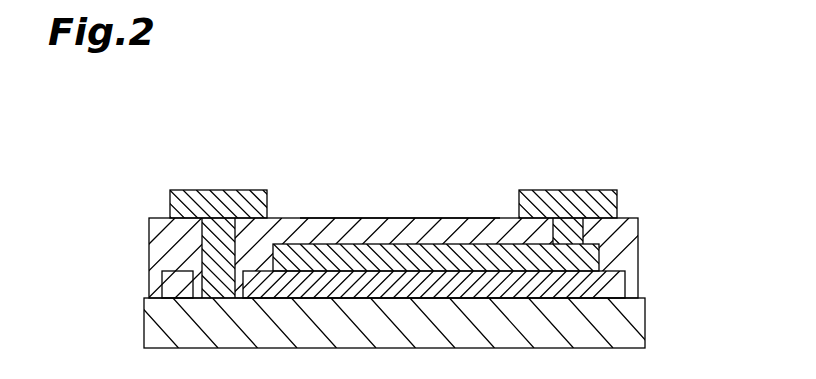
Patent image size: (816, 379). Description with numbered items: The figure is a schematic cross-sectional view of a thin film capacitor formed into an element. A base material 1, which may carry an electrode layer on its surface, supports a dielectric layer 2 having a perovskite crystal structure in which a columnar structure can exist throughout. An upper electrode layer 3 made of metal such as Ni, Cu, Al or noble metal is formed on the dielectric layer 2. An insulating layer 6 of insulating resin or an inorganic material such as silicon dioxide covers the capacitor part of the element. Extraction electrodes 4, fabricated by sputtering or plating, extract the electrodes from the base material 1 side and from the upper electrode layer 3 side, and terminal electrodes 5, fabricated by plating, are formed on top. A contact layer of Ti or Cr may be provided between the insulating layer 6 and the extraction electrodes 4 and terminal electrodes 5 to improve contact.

The base material 1 is at (635, 321).
The dielectric layer 2 is at (627, 283).
The upper electrode layer 3 is at (639, 258).
The extraction electrodes 4 is at (150, 229).
The terminal electrodes 5 is at (170, 203).
The insulating layer 6 is at (399, 227).